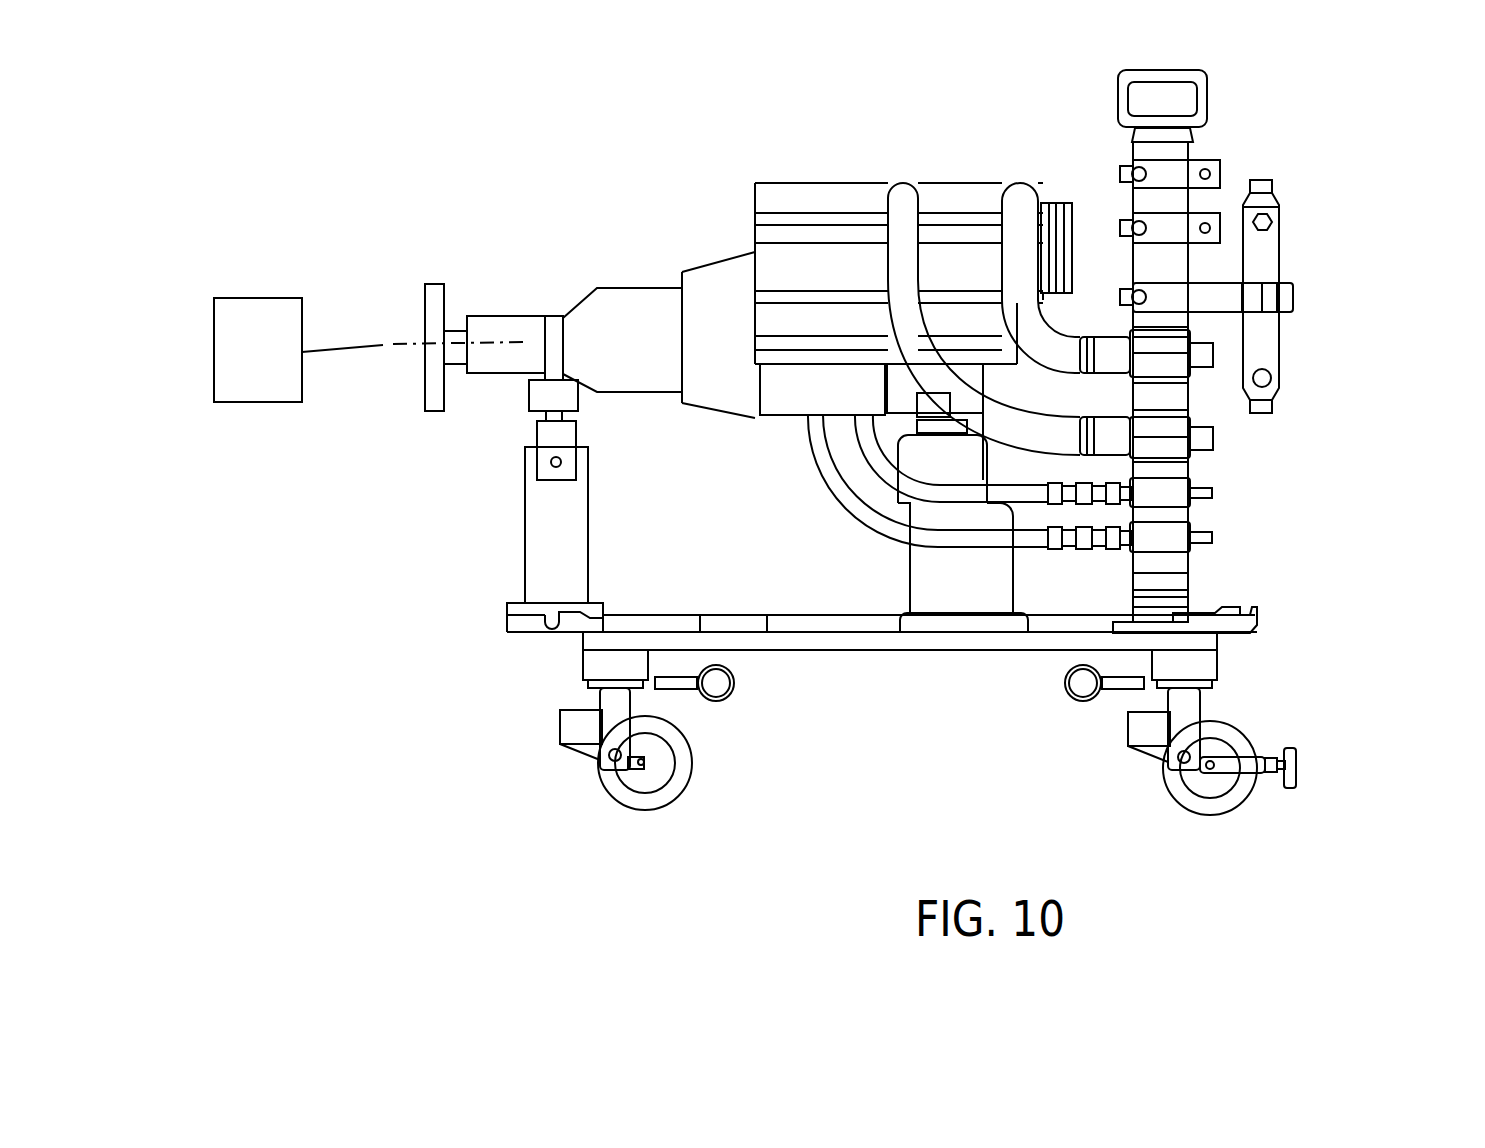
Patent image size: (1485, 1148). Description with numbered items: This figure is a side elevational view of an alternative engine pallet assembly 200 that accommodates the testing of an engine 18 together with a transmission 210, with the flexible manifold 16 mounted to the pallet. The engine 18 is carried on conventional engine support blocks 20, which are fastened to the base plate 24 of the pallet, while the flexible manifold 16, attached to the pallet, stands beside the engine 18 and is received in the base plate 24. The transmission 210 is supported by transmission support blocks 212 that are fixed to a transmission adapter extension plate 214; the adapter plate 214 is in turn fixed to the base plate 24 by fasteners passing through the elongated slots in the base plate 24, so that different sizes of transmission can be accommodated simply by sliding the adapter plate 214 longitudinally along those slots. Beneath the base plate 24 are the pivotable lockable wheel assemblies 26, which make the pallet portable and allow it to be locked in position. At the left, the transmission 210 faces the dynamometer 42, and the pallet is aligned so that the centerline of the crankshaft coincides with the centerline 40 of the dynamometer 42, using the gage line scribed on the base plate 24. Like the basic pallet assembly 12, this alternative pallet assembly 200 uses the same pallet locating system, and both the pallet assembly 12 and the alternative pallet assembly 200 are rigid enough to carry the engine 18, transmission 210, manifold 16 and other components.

The pallet assembly 12 is at (530, 679).
The flexible manifold 16 is at (1254, 498).
The engine 18 is at (880, 213).
The engine support blocks 20 is at (947, 572).
The base plate 24 is at (805, 648).
The pivotable lockable wheel assemblies 26 is at (712, 816).
The centerline of the dynamometer 40 is at (383, 345).
The dynamometer 42 is at (262, 298).
The alternative engine pallet assembly 200 is at (608, 244).
The transmission 210 is at (660, 372).
The transmission support blocks 212 is at (545, 535).
The transmission adapter extension plate 214 is at (650, 630).